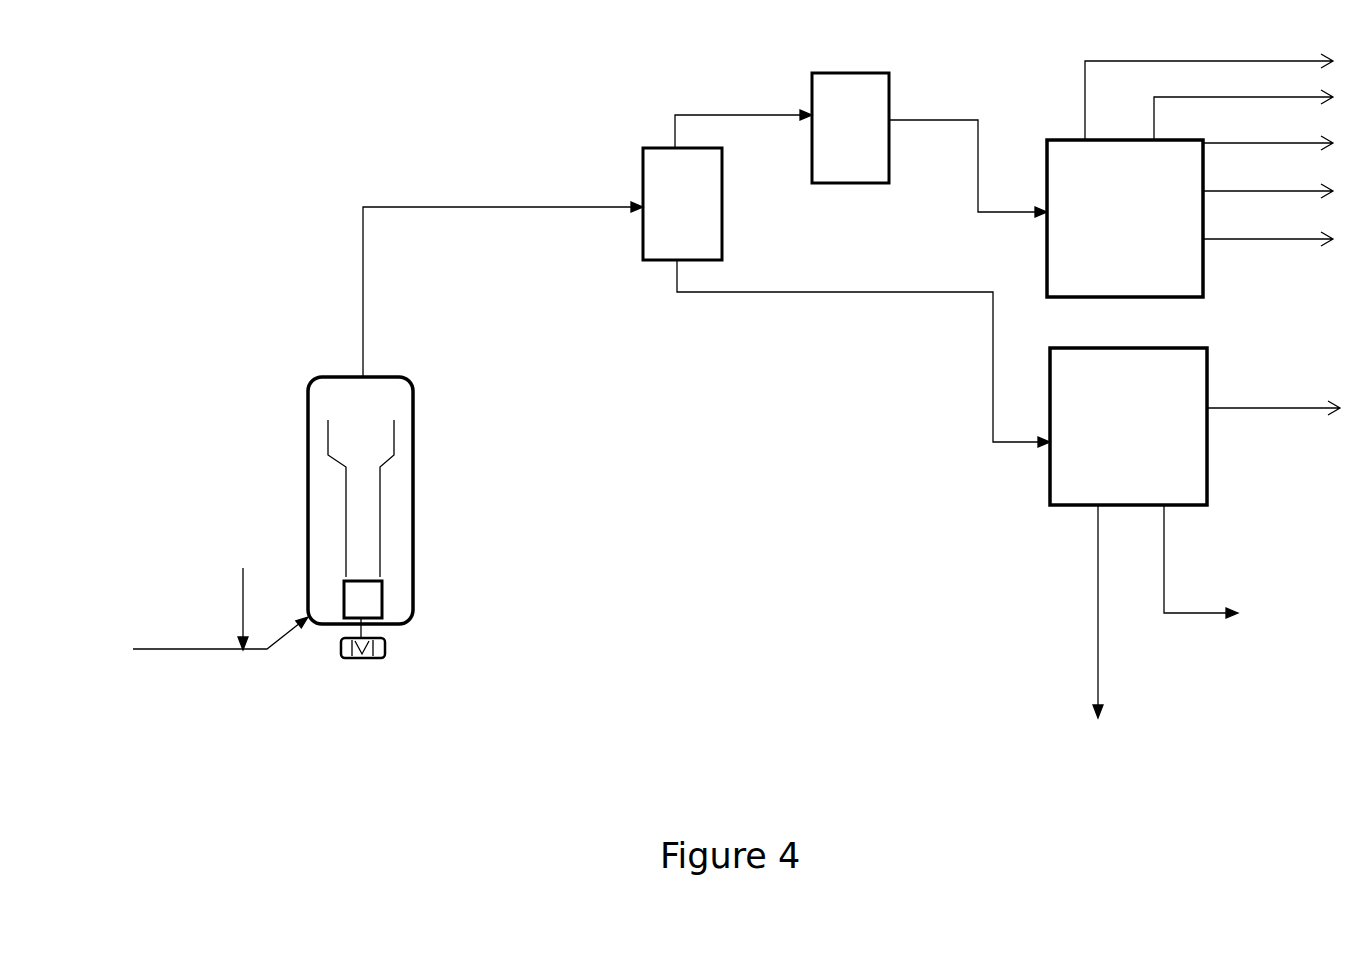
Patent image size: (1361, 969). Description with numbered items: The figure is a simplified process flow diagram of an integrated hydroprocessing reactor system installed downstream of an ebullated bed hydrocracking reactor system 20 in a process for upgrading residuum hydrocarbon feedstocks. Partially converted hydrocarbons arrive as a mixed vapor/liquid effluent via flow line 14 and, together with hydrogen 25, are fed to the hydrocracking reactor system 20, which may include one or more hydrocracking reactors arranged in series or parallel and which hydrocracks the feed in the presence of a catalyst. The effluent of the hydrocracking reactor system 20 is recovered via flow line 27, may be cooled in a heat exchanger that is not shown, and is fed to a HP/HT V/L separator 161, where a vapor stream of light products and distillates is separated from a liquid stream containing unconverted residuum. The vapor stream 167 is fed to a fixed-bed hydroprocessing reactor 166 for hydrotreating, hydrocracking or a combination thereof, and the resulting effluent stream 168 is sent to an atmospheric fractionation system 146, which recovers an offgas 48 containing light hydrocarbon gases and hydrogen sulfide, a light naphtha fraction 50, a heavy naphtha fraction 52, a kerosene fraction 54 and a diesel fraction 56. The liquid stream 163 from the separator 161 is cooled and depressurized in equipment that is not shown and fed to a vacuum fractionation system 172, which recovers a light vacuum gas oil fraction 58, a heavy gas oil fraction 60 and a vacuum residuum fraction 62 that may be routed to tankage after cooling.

The flow line 14 is at (192, 649).
The hydrocracking reactor system 20 is at (360, 517).
The hydrogen 25 is at (240, 607).
The flow line 27 is at (362, 286).
The HP/HT V/L separator 161 is at (682, 204).
The liquid stream 163 is at (797, 292).
The fixed-bed hydroprocessing reactor 166 is at (850, 128).
The vapor stream 167 is at (750, 115).
The effluent stream 168 is at (976, 120).
The atmospheric fractionation system 146 is at (1125, 218).
The offgas 48 is at (1084, 92).
The light naphtha fraction 50 is at (1153, 110).
The heavy naphtha fraction 52 is at (1287, 143).
The kerosene fraction 54 is at (1283, 190).
The diesel fraction 56 is at (1291, 238).
The vacuum fractionation system 172 is at (1128, 426).
The light vacuum gas oil fraction 58 is at (1296, 408).
The heavy gas oil fraction 60 is at (1164, 538).
The vacuum residuum fraction 62 is at (1097, 565).